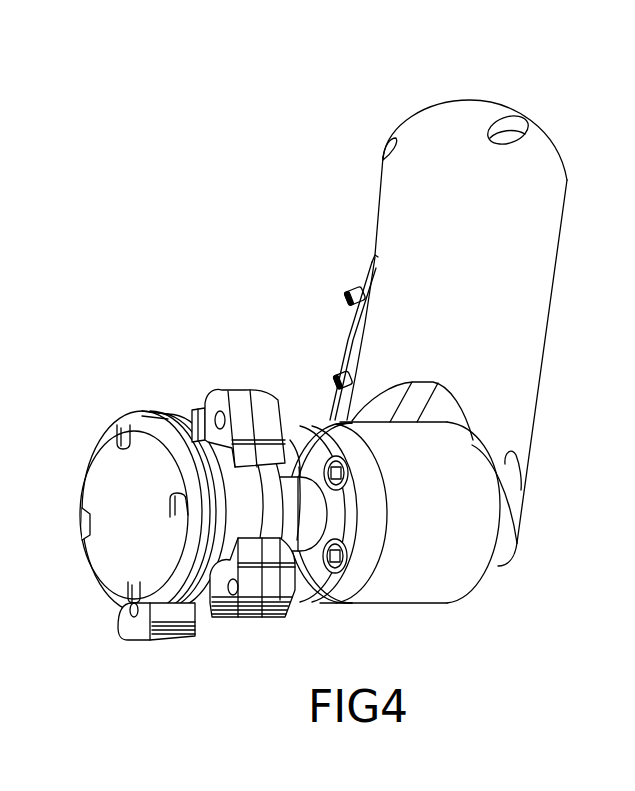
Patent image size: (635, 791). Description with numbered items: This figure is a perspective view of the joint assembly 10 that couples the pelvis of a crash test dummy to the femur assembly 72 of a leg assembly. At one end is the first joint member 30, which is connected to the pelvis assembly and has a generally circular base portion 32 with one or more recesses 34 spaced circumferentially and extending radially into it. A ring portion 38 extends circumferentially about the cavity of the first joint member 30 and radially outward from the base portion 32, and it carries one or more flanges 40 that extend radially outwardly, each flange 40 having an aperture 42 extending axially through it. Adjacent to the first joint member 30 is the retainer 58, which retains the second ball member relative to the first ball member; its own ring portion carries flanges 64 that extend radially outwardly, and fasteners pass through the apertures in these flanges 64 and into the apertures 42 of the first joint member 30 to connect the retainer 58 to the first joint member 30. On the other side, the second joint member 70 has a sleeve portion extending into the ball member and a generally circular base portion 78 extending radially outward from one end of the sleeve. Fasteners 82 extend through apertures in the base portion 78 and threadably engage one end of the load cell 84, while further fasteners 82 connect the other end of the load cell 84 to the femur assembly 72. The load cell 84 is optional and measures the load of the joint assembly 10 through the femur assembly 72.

The joint assembly 10 is at (202, 340).
The first joint member 30 is at (92, 572).
The base portion 32 is at (110, 487).
The recesses 34 is at (82, 522).
The ring portion 38 is at (247, 498).
The flanges 40 is at (128, 632).
The aperture 42 is at (133, 610).
The retainer 58 is at (306, 543).
The flanges 64 is at (178, 625).
The second joint member 70 is at (320, 420).
The femur assembly 72 is at (553, 308).
The base portion 78 is at (350, 597).
The fasteners 82 is at (327, 458).
The load cell 84 is at (430, 593).